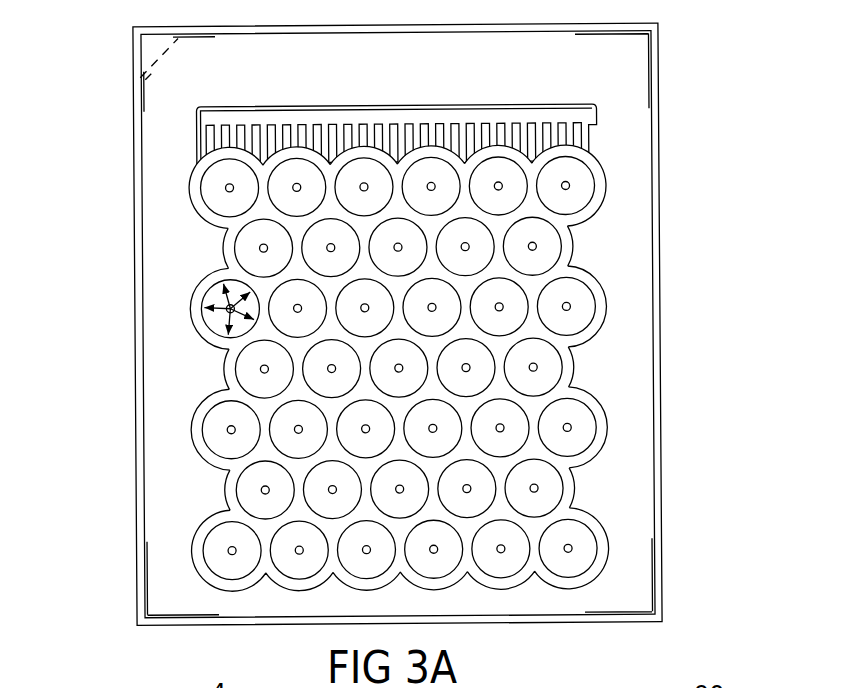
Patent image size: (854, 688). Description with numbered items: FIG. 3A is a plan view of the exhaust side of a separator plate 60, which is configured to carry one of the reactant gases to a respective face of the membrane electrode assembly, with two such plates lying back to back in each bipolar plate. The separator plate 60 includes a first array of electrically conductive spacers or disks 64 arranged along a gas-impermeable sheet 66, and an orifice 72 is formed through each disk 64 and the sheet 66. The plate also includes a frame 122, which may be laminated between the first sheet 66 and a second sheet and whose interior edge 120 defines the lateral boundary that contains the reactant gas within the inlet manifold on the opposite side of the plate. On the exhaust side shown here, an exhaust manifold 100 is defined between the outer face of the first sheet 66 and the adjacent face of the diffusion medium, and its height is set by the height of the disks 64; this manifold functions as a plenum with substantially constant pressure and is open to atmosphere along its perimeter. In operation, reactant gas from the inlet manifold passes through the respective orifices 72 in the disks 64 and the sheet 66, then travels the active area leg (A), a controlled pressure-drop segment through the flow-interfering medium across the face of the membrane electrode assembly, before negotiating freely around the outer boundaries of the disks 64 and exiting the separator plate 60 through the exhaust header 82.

The separator plate 60 is at (735, 120).
The exhaust header 82 is at (217, 117).
The frame 122 is at (588, 242).
The interior edge 120 is at (573, 345).
The disks 64 is at (585, 432).
The gas-impermeable sheet 66 is at (567, 512).
The orifice 72 is at (568, 548).
The exhaust manifold 100 is at (235, 467).
The active area leg A is at (214, 307).